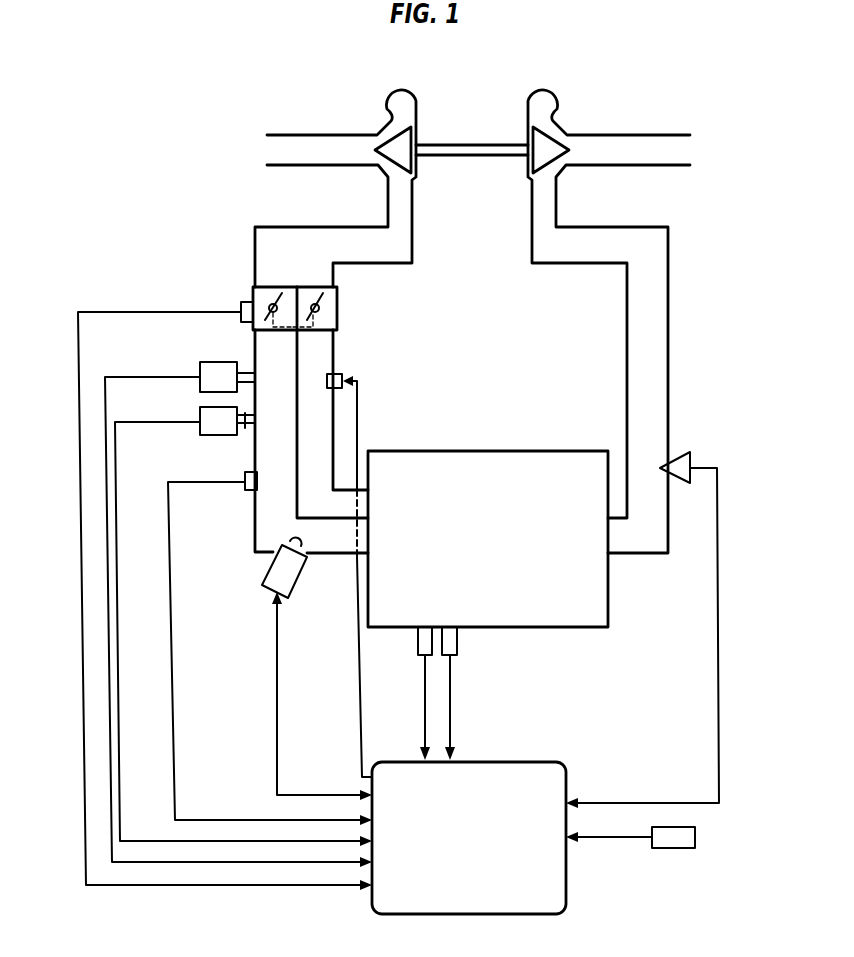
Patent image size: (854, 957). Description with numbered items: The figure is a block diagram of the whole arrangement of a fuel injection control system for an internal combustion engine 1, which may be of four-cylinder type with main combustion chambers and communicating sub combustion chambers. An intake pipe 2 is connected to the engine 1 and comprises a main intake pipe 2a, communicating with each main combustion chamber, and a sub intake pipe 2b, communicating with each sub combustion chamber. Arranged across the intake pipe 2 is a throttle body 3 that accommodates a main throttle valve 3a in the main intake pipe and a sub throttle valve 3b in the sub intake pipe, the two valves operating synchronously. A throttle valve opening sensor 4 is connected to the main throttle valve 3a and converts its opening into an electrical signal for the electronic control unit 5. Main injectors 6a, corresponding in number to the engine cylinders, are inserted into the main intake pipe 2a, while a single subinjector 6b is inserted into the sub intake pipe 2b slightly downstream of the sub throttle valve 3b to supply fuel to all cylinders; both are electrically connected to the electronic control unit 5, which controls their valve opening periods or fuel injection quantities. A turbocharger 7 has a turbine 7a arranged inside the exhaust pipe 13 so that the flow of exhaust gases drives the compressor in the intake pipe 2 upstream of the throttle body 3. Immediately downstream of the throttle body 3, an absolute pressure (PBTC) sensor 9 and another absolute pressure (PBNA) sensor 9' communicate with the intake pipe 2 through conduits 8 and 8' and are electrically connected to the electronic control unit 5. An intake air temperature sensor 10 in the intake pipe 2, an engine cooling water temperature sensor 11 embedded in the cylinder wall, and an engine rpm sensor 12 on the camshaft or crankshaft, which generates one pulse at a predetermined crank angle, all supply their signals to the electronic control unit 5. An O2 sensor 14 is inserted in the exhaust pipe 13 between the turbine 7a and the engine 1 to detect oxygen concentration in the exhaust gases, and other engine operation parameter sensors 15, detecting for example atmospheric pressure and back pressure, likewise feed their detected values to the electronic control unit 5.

The internal combustion engine 1 is at (490, 451).
The intake pipe 2 is at (282, 145).
The main intake pipe 2a is at (290, 433).
The sub intake pipe 2b is at (331, 433).
The throttle body 3 is at (349, 303).
The main throttle valve 3a is at (282, 293).
The sub throttle valve 3b is at (327, 312).
The throttle valve opening sensor 4 is at (243, 302).
The electronic control unit 5 is at (533, 760).
The main injectors 6a is at (275, 563).
The subinjector 6b is at (342, 372).
The turbocharger 7 is at (472, 128).
The turbine 7a is at (548, 124).
The conduit 8 is at (245, 359).
The conduit 8' is at (244, 436).
The absolute pressure (PBTC) sensor 9 is at (230, 590).
The absolute pressure (PBNA) sensor 9' is at (243, 626).
The intake air temperature sensor 10 is at (249, 491).
The engine cooling water temperature sensor 11 is at (458, 645).
The engine rpm sensor 12 is at (417, 643).
The exhaust pipe 13 is at (653, 135).
The O2 sensor 14 is at (692, 452).
The other engine operation parameter sensors 15 is at (693, 840).